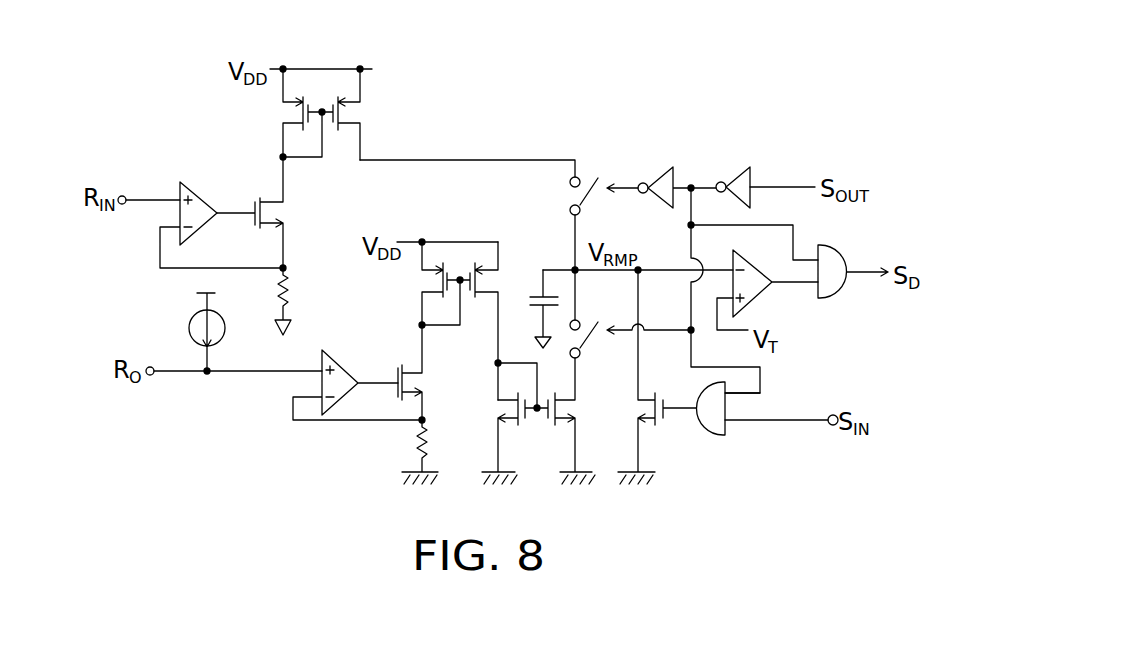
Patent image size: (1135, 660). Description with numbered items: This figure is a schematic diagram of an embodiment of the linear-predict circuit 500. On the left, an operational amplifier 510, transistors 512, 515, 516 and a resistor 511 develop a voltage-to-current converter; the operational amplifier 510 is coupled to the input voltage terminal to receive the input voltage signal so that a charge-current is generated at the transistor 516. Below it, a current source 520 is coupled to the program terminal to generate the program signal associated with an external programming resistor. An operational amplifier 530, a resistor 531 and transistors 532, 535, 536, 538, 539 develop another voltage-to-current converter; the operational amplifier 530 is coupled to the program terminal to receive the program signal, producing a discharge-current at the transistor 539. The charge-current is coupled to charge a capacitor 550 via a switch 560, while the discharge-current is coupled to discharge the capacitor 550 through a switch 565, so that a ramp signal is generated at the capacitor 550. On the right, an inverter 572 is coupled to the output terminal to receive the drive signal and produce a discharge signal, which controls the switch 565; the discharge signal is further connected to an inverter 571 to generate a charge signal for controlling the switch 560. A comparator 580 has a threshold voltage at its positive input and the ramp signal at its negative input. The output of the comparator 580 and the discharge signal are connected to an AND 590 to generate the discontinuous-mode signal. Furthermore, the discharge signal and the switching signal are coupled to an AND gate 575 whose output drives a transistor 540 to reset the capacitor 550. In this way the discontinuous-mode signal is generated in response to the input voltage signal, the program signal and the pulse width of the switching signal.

The linear-predict circuit 500 is at (857, 108).
The operational amplifier 510 is at (200, 200).
The resistor 511 is at (302, 301).
The transistor 512 is at (271, 214).
The transistor 515 is at (282, 114).
The transistor 516 is at (362, 114).
The current source 520 is at (190, 330).
The operational amplifier 530 is at (347, 373).
The resistor 531 is at (433, 452).
The transistor 532 is at (431, 374).
The transistor 535 is at (421, 285).
The transistor 536 is at (485, 303).
The transistor 538 is at (511, 438).
The transistor 539 is at (577, 421).
The transistor 540 is at (637, 410).
The capacitor 550 is at (533, 295).
The switch 560 is at (588, 173).
The switch 565 is at (630, 314).
The inverter 571 is at (661, 177).
The inverter 572 is at (735, 175).
The AND gate 575 is at (715, 425).
The comparator 580 is at (757, 290).
The AND 590 is at (833, 282).